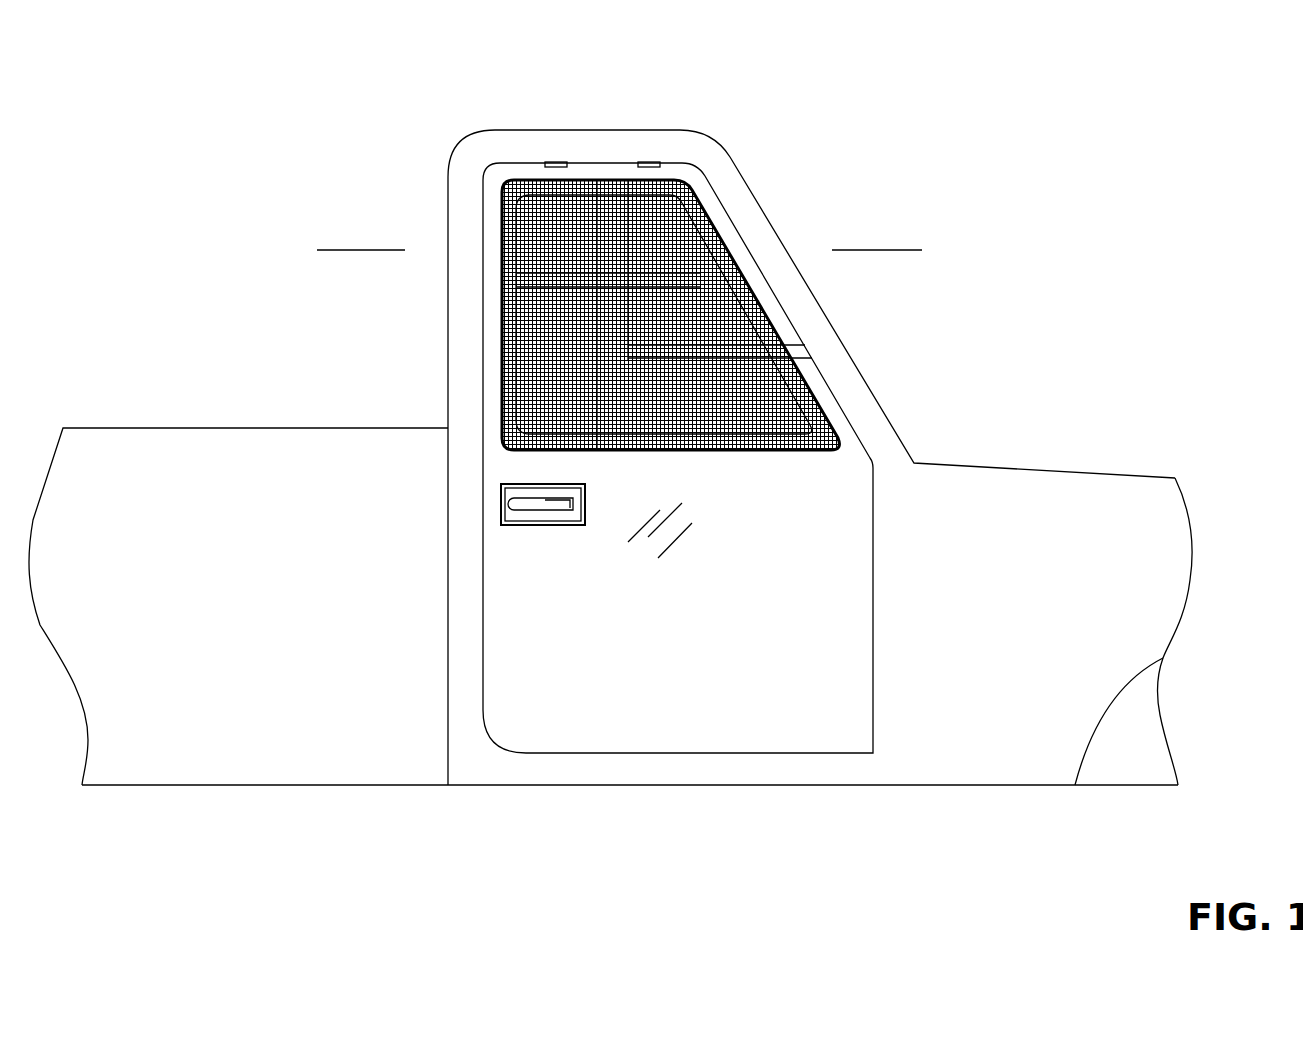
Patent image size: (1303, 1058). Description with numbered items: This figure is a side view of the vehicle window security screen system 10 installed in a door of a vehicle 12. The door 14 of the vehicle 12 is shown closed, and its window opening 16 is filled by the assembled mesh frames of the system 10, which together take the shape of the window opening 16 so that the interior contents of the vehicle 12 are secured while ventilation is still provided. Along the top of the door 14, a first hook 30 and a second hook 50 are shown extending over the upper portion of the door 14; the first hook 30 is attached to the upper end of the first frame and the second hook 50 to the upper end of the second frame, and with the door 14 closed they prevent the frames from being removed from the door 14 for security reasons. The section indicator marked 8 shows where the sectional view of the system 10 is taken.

The section line 8- 8 is at (362, 235).
The vehicle window security screen system 10 is at (1087, 130).
The vehicle 12 is at (1045, 468).
The door 14 is at (652, 646).
The window opening 16 is at (797, 357).
The first hook 30 is at (553, 162).
The second hook 50 is at (648, 162).